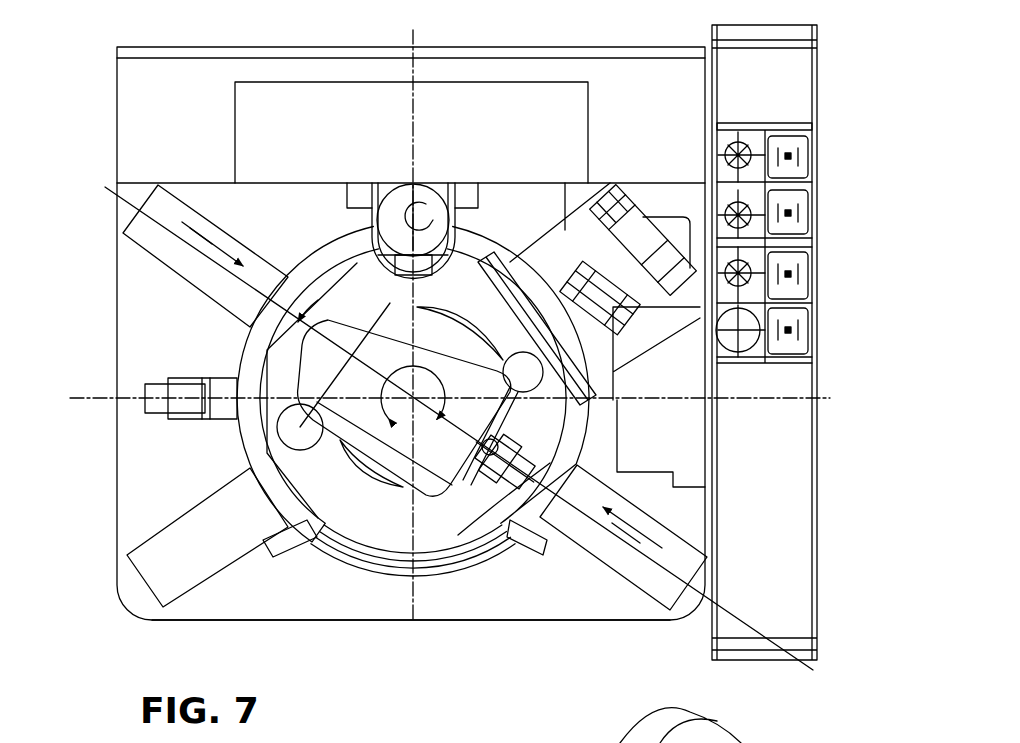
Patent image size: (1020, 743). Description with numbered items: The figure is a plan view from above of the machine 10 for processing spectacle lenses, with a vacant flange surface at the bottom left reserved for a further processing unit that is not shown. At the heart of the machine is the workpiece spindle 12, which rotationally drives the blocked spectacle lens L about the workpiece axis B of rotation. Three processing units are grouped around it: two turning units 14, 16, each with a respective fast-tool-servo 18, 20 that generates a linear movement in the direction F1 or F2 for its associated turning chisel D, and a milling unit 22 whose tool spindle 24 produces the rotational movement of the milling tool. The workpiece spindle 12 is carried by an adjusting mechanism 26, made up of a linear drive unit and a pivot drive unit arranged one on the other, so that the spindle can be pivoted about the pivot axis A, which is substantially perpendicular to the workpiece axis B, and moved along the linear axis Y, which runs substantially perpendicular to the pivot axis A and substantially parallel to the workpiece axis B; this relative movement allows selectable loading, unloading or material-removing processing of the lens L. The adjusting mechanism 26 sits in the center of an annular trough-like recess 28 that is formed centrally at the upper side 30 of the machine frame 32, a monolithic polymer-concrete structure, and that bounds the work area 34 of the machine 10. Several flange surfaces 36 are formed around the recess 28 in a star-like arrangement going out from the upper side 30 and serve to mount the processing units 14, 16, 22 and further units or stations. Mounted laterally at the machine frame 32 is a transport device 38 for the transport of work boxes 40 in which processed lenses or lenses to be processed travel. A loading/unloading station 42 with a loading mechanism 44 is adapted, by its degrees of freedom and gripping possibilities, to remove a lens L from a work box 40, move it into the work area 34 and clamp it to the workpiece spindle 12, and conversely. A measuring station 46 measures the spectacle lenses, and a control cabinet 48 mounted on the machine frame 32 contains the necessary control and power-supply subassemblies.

The machine 10 is at (588, 44).
The workpiece spindle 12 is at (506, 431).
The turning unit 14 is at (612, 548).
The turning unit 16 is at (180, 257).
The fast-tool-servo 18 is at (680, 597).
The fast-tool-servo 20 is at (170, 248).
The milling unit 22 is at (428, 205).
The tool spindle 24 is at (437, 270).
The adjusting mechanism 26 is at (362, 468).
The annular trough-like recess 28 is at (408, 542).
The upper side 30 is at (173, 505).
The machine frame 32 is at (333, 623).
The work area 34 is at (352, 275).
The flange surfaces 36 is at (193, 577).
The transport device 38 is at (785, 520).
The work boxes 40 is at (795, 200).
The loading/unloading station 42 is at (681, 212).
The loading mechanism 44 is at (633, 273).
The measuring station 46 is at (181, 390).
The control cabinet 48 is at (203, 140).
The pivot axis A is at (412, 380).
The workpiece axis of rotation B is at (477, 510).
The turning chisel D is at (424, 414).
The spectacle lens L is at (560, 462).
The linear axis Y is at (446, 452).
The direction of linear movement F1 is at (632, 524).
The direction of linear movement F2 is at (206, 244).